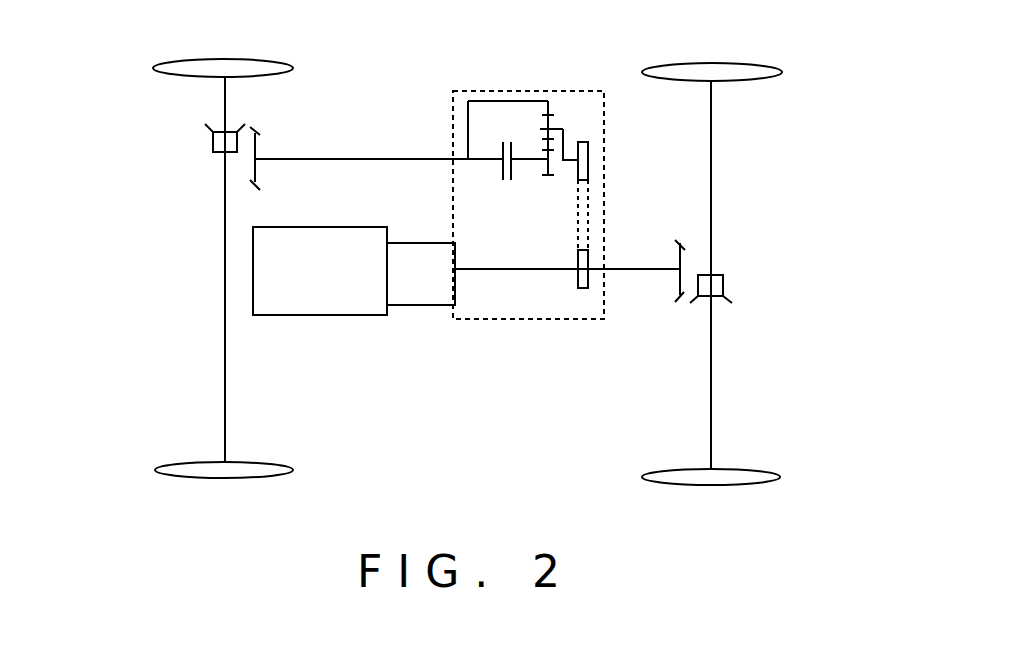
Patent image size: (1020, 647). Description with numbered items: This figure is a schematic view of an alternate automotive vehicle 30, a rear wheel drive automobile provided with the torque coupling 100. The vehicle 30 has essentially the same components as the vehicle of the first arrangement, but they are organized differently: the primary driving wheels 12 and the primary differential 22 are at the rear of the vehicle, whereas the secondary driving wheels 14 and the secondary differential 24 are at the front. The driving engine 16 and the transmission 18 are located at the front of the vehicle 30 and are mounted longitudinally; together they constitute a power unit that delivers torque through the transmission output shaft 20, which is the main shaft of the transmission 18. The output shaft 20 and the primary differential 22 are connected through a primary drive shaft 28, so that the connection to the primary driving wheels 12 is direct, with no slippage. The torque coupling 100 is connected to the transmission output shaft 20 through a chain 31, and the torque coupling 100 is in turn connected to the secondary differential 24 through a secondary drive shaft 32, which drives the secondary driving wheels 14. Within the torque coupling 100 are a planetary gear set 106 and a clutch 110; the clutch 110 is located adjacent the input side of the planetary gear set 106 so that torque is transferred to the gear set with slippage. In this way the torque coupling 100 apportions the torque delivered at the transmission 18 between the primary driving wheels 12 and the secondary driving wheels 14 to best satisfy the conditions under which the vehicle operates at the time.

The primary driving wheels 12 is at (703, 72).
The secondary driving wheels 14 is at (227, 67).
The driving engine 16 is at (338, 298).
The transmission 18 is at (440, 295).
The transmission output shaft 20 is at (498, 270).
The primary differential 22 is at (712, 288).
The secondary differential 24 is at (222, 140).
The primary drive shaft 28 is at (603, 270).
The automotive vehicle 30 is at (184, 408).
The chain 31 is at (578, 215).
The secondary drive shaft 32 is at (358, 160).
The torque coupling 100 is at (462, 101).
The planetary gear set 106 is at (558, 128).
The clutch 110 is at (503, 178).